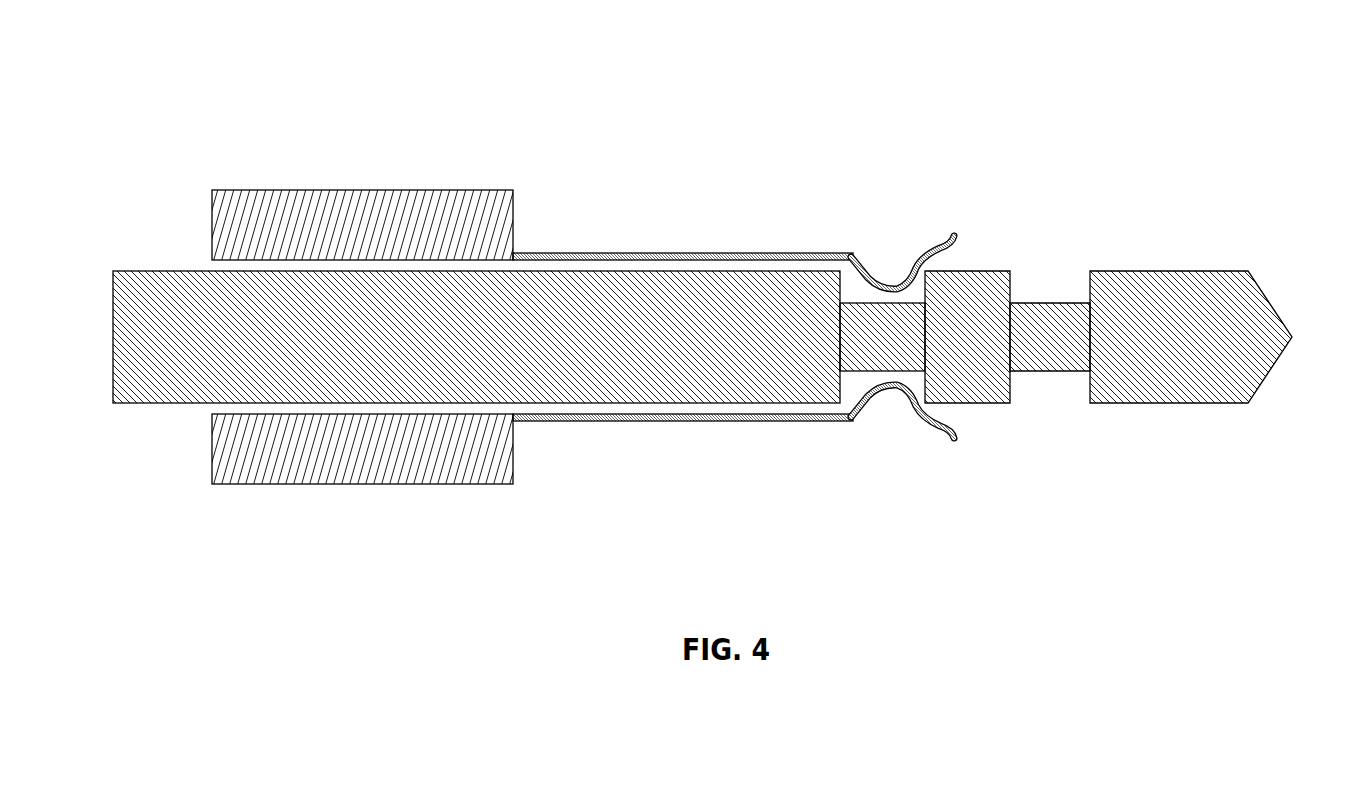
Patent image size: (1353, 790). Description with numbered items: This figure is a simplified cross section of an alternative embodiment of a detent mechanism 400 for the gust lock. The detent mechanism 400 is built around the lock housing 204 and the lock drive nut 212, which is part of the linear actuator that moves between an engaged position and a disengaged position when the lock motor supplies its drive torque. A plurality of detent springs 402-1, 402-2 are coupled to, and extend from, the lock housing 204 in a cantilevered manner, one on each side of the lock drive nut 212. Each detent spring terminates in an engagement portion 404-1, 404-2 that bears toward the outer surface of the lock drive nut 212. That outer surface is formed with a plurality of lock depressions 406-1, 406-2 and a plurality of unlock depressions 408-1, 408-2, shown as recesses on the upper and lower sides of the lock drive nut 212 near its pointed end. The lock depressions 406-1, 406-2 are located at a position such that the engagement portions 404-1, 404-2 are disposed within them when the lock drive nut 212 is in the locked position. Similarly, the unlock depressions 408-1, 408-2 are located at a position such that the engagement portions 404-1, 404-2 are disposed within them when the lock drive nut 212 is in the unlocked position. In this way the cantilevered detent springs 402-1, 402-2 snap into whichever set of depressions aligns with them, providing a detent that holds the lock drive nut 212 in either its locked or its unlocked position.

The detent mechanism 400 is at (218, 118).
The lock housing 204 is at (452, 190).
The detent spring 402-1 is at (721, 253).
The detent spring 402-2 is at (721, 421).
The engagement portion 404-1 is at (895, 282).
The engagement portion 404-2 is at (895, 392).
The lock depression 406-1 is at (915, 295).
The lock depression 406-2 is at (915, 378).
The unlock depression 408-1 is at (1050, 285).
The unlock depression 408-2 is at (1050, 390).
The lock drive nut 212 is at (1177, 270).